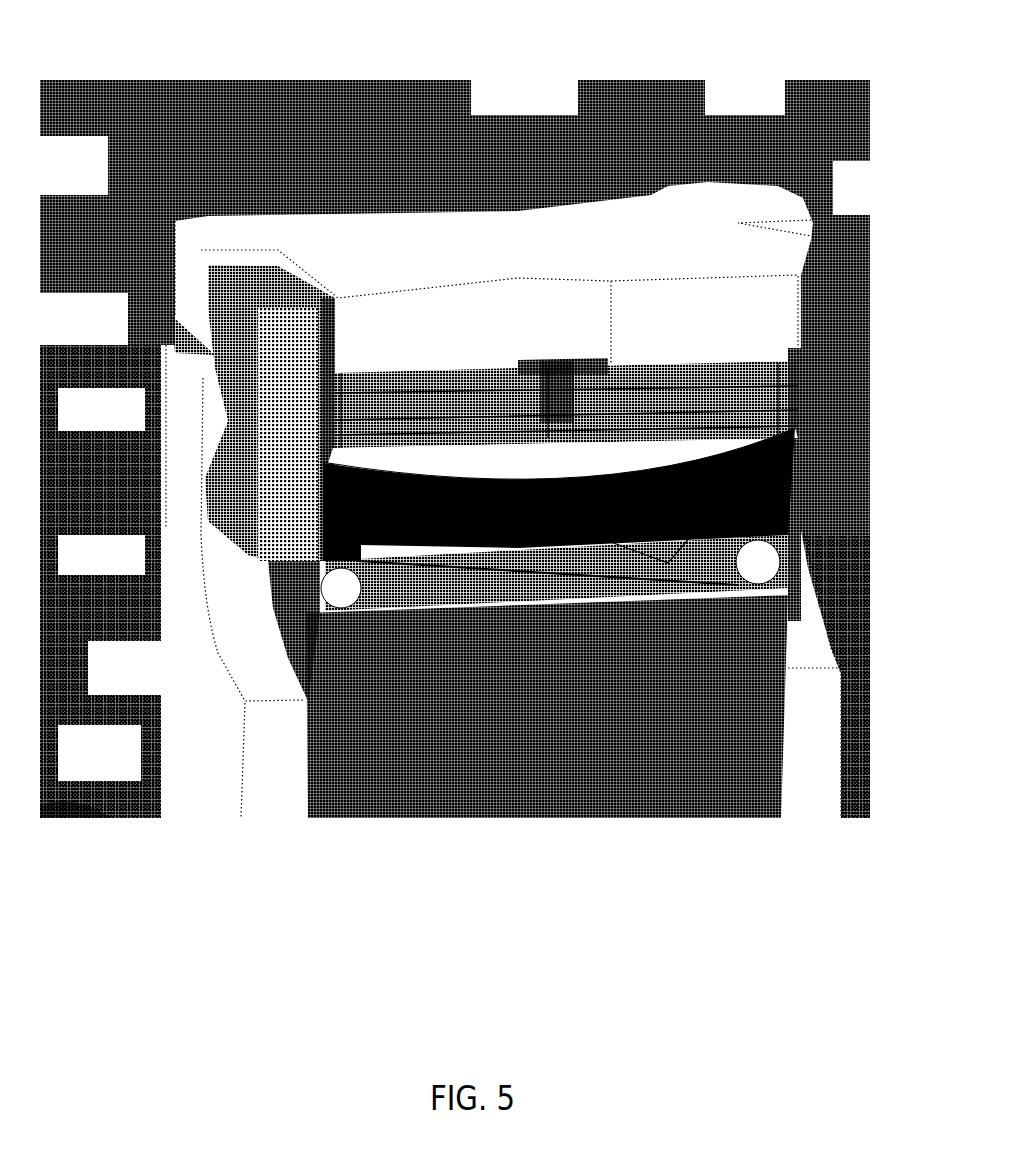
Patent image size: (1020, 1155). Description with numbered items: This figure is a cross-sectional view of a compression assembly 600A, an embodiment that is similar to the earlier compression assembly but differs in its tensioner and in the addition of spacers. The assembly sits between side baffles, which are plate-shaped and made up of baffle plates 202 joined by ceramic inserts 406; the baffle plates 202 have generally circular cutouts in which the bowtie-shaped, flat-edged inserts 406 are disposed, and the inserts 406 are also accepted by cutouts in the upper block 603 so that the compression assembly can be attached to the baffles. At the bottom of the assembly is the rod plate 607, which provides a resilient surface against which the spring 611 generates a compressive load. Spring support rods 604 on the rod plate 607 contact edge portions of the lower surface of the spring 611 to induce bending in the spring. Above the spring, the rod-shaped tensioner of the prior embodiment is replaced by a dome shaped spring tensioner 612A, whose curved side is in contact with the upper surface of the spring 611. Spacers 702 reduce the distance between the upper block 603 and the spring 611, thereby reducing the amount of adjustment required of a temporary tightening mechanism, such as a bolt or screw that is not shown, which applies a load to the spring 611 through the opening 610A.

The compression assembly 600A is at (228, 49).
The baffle plate 202 is at (200, 740).
The ceramic insert 406 is at (803, 240).
The upper block 603 is at (692, 192).
The spring support rod 604 is at (317, 580).
The rod plate 607 is at (287, 593).
The opening 610A is at (545, 357).
The spring 611 is at (317, 503).
The dome shaped spring tensioner 612A is at (503, 458).
The spacer 702 is at (450, 393).